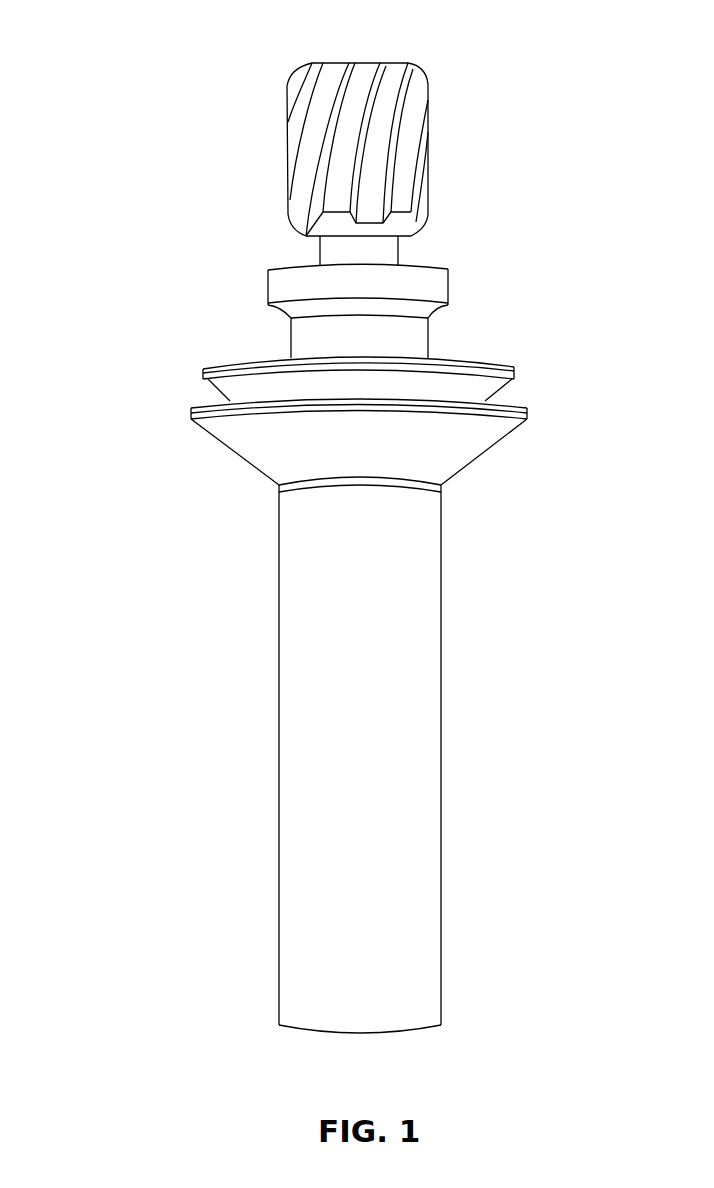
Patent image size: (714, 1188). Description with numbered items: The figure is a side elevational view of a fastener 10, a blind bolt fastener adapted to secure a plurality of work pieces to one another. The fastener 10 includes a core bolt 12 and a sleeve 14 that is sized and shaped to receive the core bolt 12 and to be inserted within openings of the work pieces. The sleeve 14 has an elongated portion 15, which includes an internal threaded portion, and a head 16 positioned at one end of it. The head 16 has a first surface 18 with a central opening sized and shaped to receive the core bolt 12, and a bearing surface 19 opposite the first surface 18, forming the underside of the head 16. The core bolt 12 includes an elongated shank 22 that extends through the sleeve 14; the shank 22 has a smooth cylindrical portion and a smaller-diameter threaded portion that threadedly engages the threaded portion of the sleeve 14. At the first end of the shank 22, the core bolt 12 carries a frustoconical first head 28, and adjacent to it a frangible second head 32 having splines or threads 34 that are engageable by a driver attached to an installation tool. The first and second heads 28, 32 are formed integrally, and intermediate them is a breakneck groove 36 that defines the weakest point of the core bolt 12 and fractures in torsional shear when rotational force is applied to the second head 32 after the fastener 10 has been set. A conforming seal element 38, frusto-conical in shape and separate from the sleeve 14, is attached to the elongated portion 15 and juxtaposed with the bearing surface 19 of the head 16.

The fastener 10 is at (128, 44).
The core bolt 12 is at (413, 285).
The sleeve 14 is at (442, 613).
The elongated portion 15 is at (398, 667).
The head 16 is at (490, 382).
The first surface 18 is at (252, 365).
The bearing surface 19 is at (228, 383).
The elongated shank 22 is at (305, 338).
The first head 28 is at (312, 278).
The second head 32 is at (298, 127).
The splines or threads 34 is at (395, 138).
The breakneck groove 36 is at (377, 247).
The conforming seal element 38 is at (267, 452).